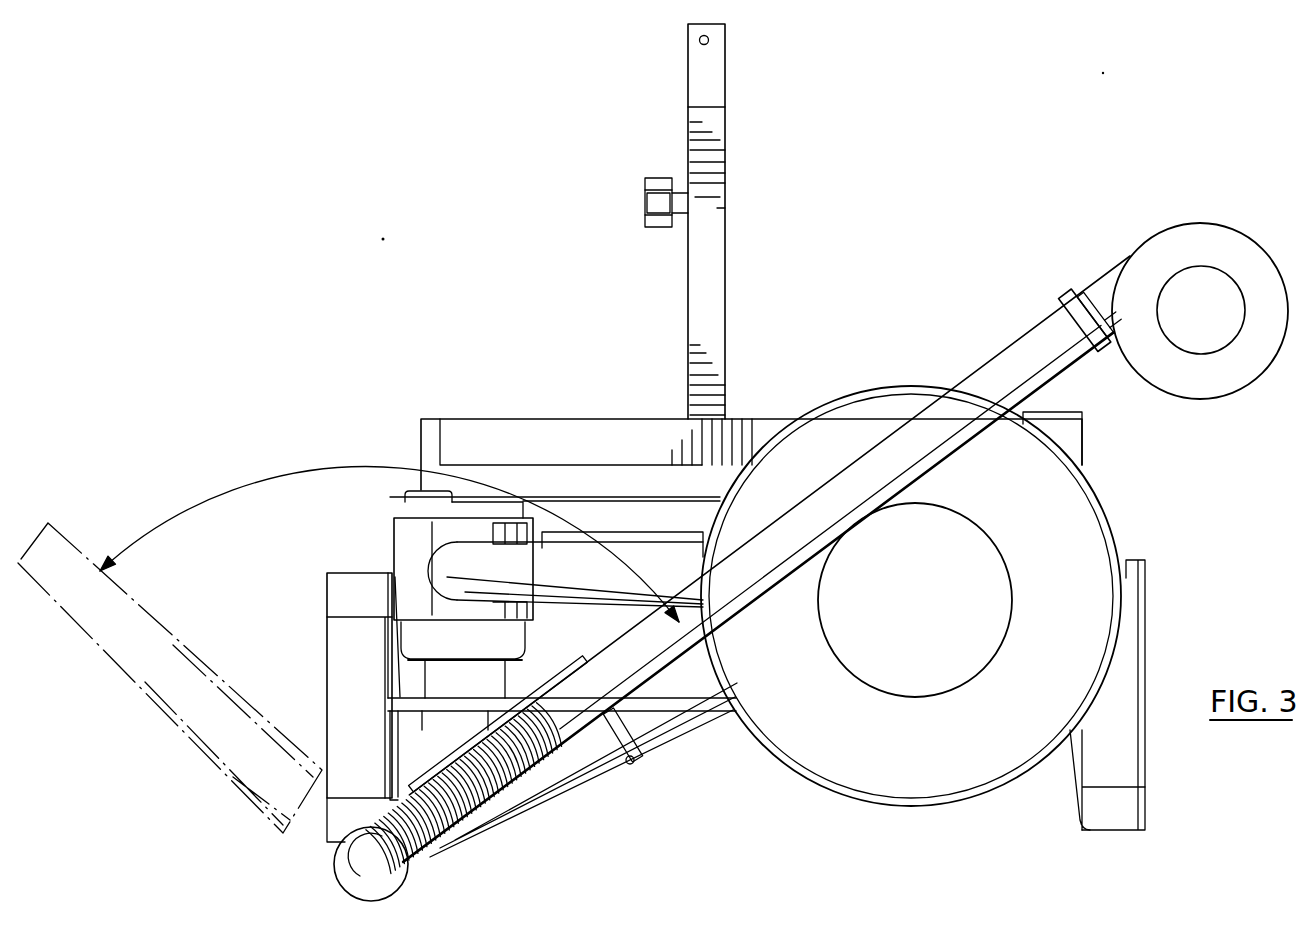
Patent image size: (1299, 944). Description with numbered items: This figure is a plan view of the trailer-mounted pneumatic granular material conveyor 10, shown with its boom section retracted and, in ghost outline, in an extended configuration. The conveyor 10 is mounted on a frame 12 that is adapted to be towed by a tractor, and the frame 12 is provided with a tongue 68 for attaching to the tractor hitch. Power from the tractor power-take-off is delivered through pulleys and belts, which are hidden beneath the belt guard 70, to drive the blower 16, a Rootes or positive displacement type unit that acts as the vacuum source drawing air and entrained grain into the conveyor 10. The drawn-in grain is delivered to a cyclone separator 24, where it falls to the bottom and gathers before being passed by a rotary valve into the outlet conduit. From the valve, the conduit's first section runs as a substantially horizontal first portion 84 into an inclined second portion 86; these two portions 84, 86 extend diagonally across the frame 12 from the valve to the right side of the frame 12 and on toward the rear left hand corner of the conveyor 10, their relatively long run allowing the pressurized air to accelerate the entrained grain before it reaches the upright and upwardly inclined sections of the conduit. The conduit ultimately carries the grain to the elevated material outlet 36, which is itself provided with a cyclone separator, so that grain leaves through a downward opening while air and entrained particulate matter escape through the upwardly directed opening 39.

The granular material conveyor 10 is at (320, 232).
The frame 12 is at (580, 437).
The blower 16 is at (403, 495).
The cyclone separator 24 is at (1110, 500).
The material outlet 36 is at (1162, 240).
The upwardly directed opening 39 is at (1202, 335).
The tongue 68 is at (723, 164).
The belt guard 70 is at (497, 419).
The first portion 84 is at (687, 732).
The second portion 86 is at (560, 788).